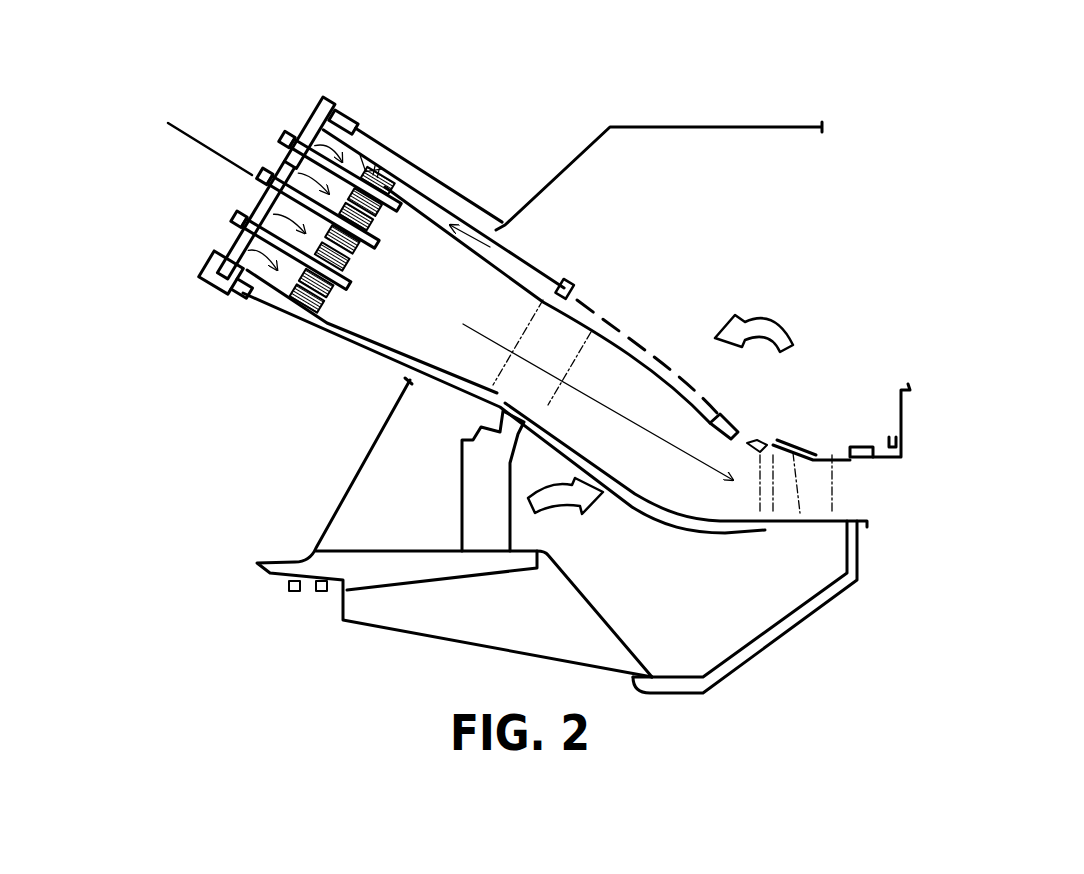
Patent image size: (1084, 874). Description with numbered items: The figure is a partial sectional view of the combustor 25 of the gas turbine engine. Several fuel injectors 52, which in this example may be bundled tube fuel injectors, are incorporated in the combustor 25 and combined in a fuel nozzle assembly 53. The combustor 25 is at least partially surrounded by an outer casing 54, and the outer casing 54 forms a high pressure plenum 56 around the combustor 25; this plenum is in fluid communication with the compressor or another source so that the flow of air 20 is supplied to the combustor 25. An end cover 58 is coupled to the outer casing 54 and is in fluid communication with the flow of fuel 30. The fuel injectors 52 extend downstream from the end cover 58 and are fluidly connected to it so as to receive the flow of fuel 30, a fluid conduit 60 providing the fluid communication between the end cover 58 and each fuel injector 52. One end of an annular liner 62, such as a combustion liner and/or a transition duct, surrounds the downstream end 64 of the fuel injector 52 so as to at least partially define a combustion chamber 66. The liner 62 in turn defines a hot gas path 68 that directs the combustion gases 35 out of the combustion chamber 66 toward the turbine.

The flow of air 20 is at (293, 143).
The combustor 25 is at (490, 84).
The flow of fuel 30 is at (190, 138).
The combustion gases 35 is at (583, 398).
The fuel injector 52 is at (385, 345).
The fuel nozzle assembly 53 is at (218, 257).
The outer casing 54 is at (592, 142).
The high pressure plenum 56 is at (728, 228).
The end cover 58 is at (325, 110).
The fluid conduit 60 is at (293, 210).
The annular liner 62 is at (523, 258).
The downstream end 64 is at (368, 247).
The combustion chamber 66 is at (434, 293).
The hot gas path 68 is at (566, 290).